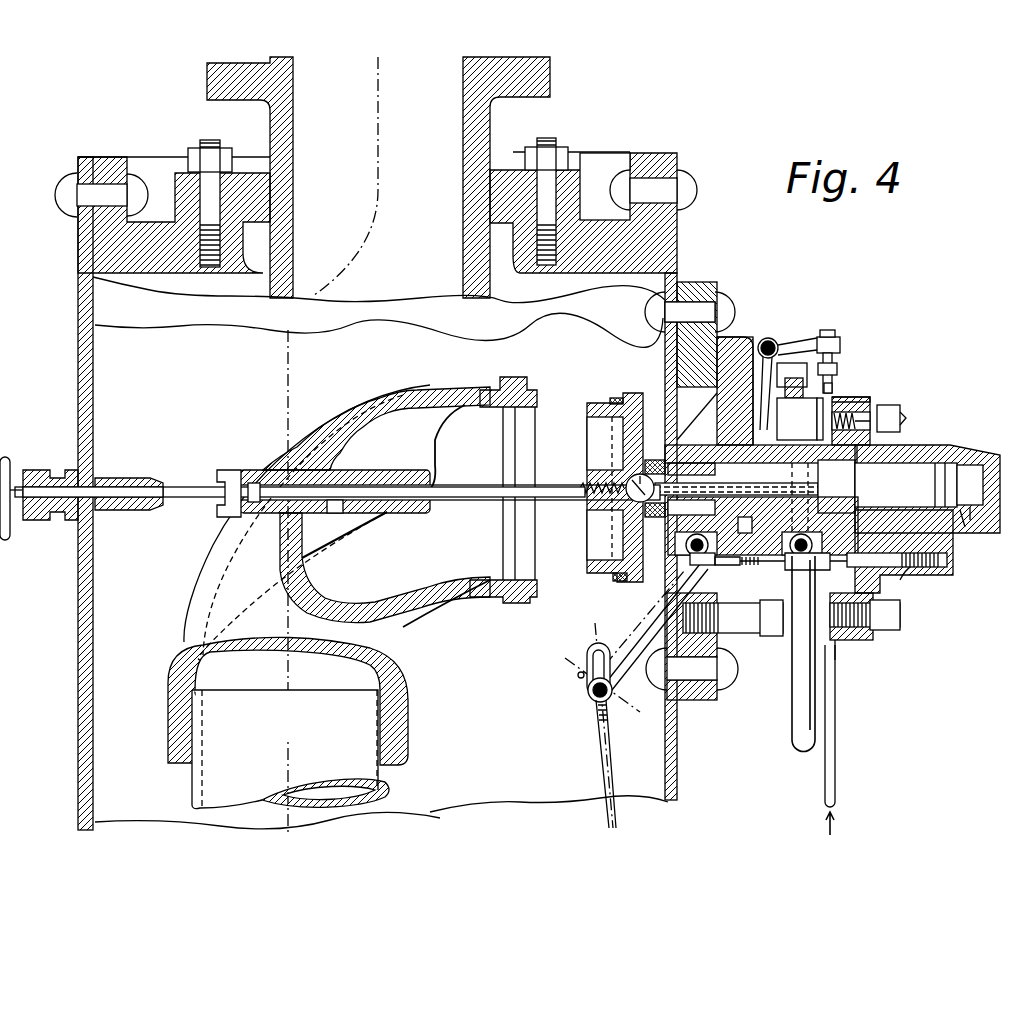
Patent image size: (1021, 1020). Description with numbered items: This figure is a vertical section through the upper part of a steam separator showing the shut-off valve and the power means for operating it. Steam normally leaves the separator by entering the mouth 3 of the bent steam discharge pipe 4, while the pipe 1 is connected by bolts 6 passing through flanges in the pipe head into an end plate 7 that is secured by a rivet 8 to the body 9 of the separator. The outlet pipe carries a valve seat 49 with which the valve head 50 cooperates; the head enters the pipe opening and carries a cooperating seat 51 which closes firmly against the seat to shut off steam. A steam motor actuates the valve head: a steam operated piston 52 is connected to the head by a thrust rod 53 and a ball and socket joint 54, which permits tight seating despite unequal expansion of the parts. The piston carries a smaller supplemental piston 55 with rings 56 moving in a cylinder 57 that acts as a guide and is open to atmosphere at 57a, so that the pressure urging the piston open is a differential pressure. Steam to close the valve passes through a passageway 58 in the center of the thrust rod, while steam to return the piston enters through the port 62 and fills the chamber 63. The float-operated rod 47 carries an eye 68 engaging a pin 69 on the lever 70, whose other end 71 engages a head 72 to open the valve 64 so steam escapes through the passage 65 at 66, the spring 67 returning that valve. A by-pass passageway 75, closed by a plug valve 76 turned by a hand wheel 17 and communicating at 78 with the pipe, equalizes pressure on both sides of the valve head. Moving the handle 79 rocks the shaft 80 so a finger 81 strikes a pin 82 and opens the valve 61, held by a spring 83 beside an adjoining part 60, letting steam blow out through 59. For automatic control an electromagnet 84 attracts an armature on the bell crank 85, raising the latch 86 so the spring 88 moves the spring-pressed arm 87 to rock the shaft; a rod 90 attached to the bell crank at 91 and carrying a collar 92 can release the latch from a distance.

The pipe 1 is at (462, 128).
The steam discharge pipe mouth 3 is at (482, 565).
The steam discharge pipe 4 is at (288, 722).
The bolts 6 is at (193, 152).
The end plate 7 is at (110, 235).
The rivet 8 is at (68, 205).
The separator body 9 is at (90, 272).
The hand wheel 17 is at (10, 458).
The rod 47 is at (610, 757).
The valve seat 49 is at (538, 386).
The valve head 50 is at (590, 410).
The cooperating seat 51 is at (610, 401).
The steam operated piston 52 is at (836, 486).
The thrust rod 53 is at (730, 490).
The ball and socket joint 54 is at (626, 505).
The supplemental piston 55 is at (906, 485).
The rings 56 is at (940, 468).
The cylinder 57 is at (968, 472).
The atmospheric opening 57a is at (975, 522).
The steam passageway 58 is at (628, 476).
The atmospheric outlet 59 is at (952, 522).
The housing part 60 is at (920, 586).
The blow-out valve 61 is at (930, 580).
The port 62 is at (660, 458).
The chamber 63 is at (785, 381).
The valve 64 is at (737, 622).
The passage 65 is at (745, 522).
The escape outlet 66 is at (768, 565).
The spring 67 is at (805, 568).
The eye 68 is at (593, 653).
The pin 69 is at (590, 694).
The lever 70 is at (647, 618).
The lever end 71 is at (702, 560).
The head 72 is at (692, 554).
The by-pass passageway 75 is at (283, 482).
The plug valve 76 is at (222, 478).
The passageway end 78 is at (335, 513).
The handle 79 is at (800, 733).
The shaft 80 is at (897, 622).
The finger 81 is at (860, 632).
The pin 82 is at (845, 635).
The spring 83 is at (945, 562).
The electromagnet 84 is at (797, 365).
The bell crank 85 is at (763, 341).
The latch 86 is at (832, 337).
The spring-pressed arm 87 is at (838, 368).
The spring 88 is at (782, 398).
The rod 90 is at (836, 770).
The attachment point 91 is at (842, 345).
The collar 92 is at (835, 387).